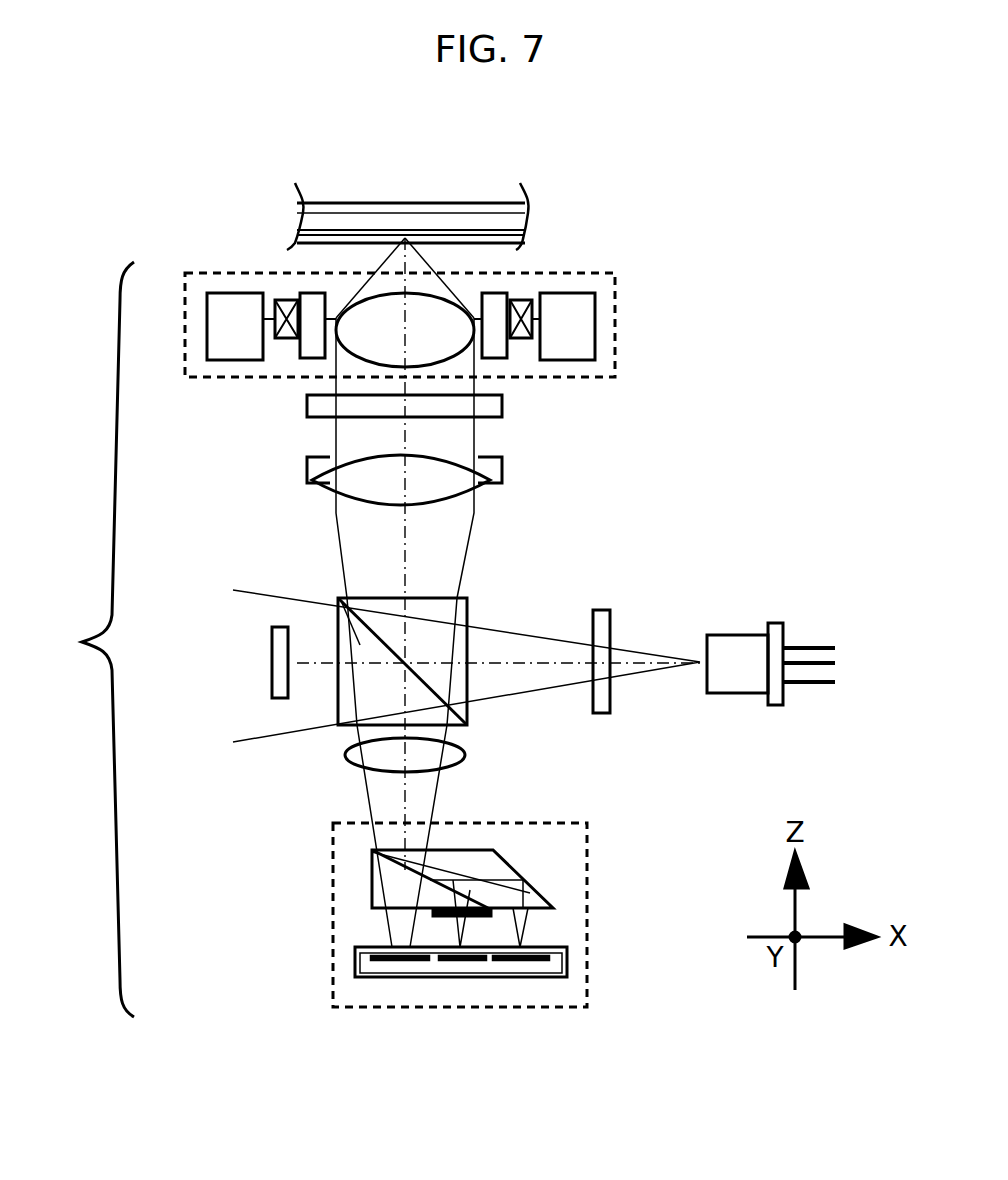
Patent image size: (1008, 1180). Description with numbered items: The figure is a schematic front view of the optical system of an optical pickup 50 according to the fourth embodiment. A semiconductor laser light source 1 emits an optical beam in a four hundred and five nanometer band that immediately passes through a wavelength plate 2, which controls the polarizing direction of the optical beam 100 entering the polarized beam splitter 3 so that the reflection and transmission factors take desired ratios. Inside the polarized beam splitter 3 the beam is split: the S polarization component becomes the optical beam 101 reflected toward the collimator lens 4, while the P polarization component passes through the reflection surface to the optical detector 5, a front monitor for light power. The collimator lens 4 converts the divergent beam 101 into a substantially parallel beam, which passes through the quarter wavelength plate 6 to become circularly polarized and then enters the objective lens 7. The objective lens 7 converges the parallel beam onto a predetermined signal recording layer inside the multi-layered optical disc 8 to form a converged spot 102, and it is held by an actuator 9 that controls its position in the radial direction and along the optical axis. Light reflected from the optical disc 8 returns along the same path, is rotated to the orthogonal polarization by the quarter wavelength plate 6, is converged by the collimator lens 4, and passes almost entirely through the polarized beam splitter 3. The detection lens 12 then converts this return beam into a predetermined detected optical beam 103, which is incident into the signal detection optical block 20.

The semiconductor laser light source 1 is at (743, 633).
The wavelength plate 2 is at (598, 610).
The polarized beam splitter 3 is at (338, 607).
The collimator lens 4 is at (312, 480).
The optical detector for monitoring light power 5 is at (272, 695).
The quarter wavelength plate 6 is at (330, 420).
The objective lens 7 is at (379, 317).
The optical disc 8 is at (437, 218).
The actuator 9 is at (615, 335).
The detection lens 12 is at (462, 750).
The signal detection optical block 20 is at (587, 913).
The optical pickup 50 is at (33, 658).
The optical beam 100 is at (513, 628).
The optical beam of S polarization component 101 is at (438, 547).
The converged spot 102 is at (403, 237).
The detected optical beam 103 is at (375, 795).